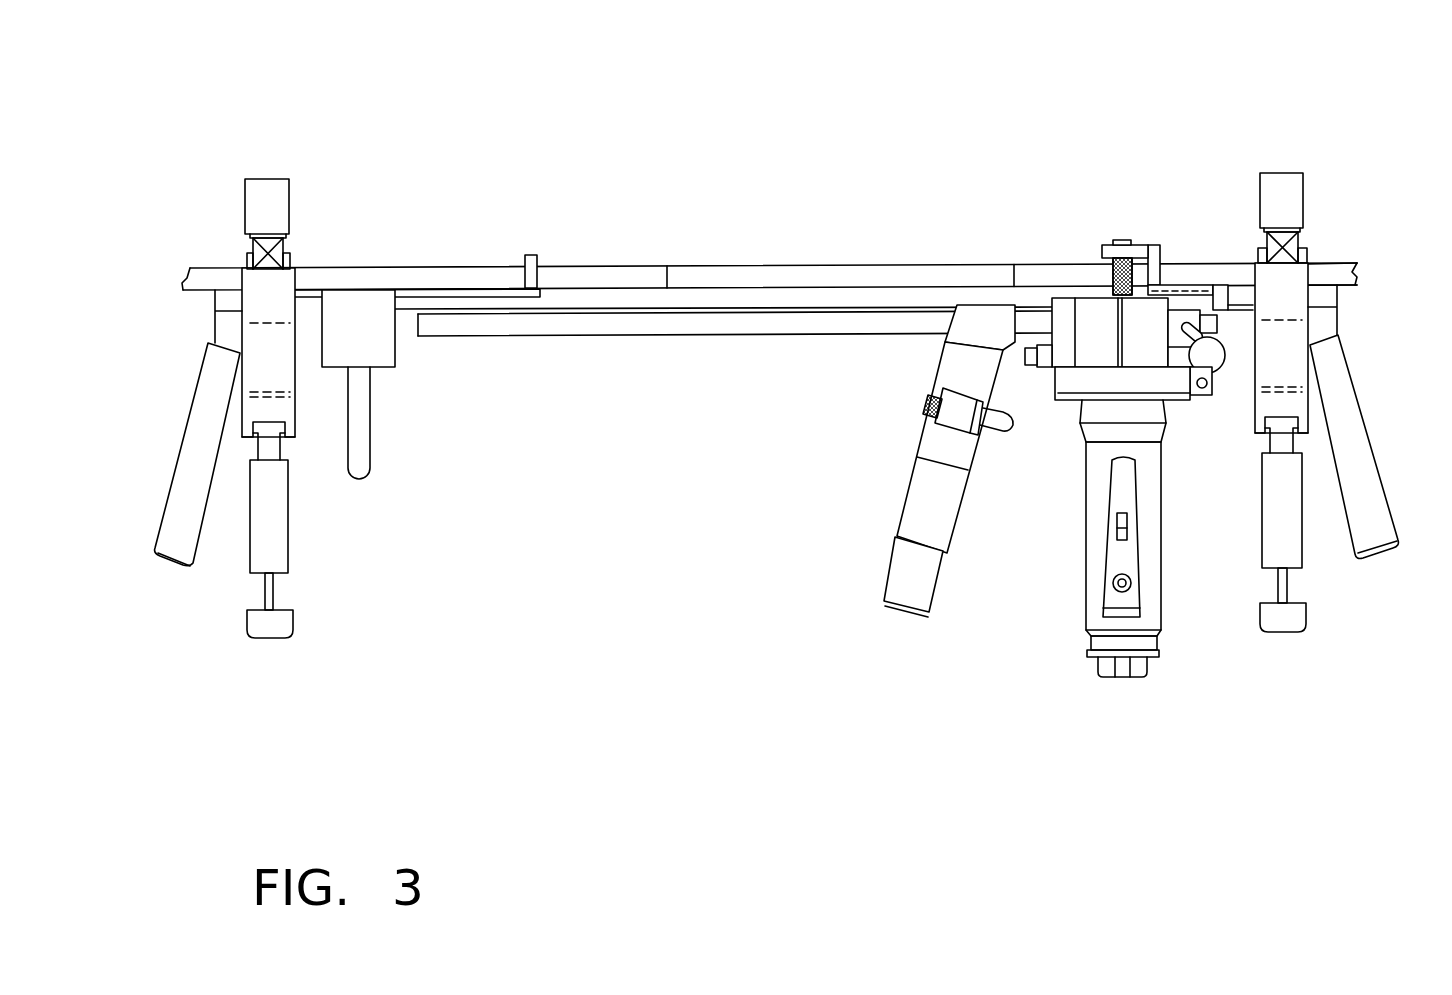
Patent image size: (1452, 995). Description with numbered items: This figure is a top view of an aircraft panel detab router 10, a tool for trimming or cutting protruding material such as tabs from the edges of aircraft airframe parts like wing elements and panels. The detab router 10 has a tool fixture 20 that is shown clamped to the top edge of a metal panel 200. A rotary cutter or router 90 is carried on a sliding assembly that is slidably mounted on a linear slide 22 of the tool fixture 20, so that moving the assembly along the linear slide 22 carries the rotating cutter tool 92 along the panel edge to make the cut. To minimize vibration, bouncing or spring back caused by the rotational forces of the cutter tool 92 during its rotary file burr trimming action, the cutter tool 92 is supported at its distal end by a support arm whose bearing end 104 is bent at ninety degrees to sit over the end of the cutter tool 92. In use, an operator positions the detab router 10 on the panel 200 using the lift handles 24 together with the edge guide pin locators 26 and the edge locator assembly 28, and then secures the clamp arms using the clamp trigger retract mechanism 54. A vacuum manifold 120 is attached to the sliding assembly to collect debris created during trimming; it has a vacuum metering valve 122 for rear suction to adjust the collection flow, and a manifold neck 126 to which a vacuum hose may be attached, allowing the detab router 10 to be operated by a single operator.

The aircraft panel detab router 10 is at (1173, 78).
The tool fixture 20 is at (735, 298).
The linear slide 22 is at (677, 338).
The lift handles 24 is at (192, 440).
The edge guide pin locators 26 is at (530, 256).
The edge locator assembly 28 is at (363, 451).
The clamp trigger retract mechanism 54 is at (277, 538).
The rotary cutter or router 90 is at (1093, 641).
The cutter tool 92 is at (1113, 275).
The bearing end 104 is at (1110, 246).
The vacuum manifold 120 is at (913, 471).
The vacuum metering valve 122 is at (997, 427).
The manifold neck 126 is at (893, 573).
The metal panel 200 is at (1333, 273).